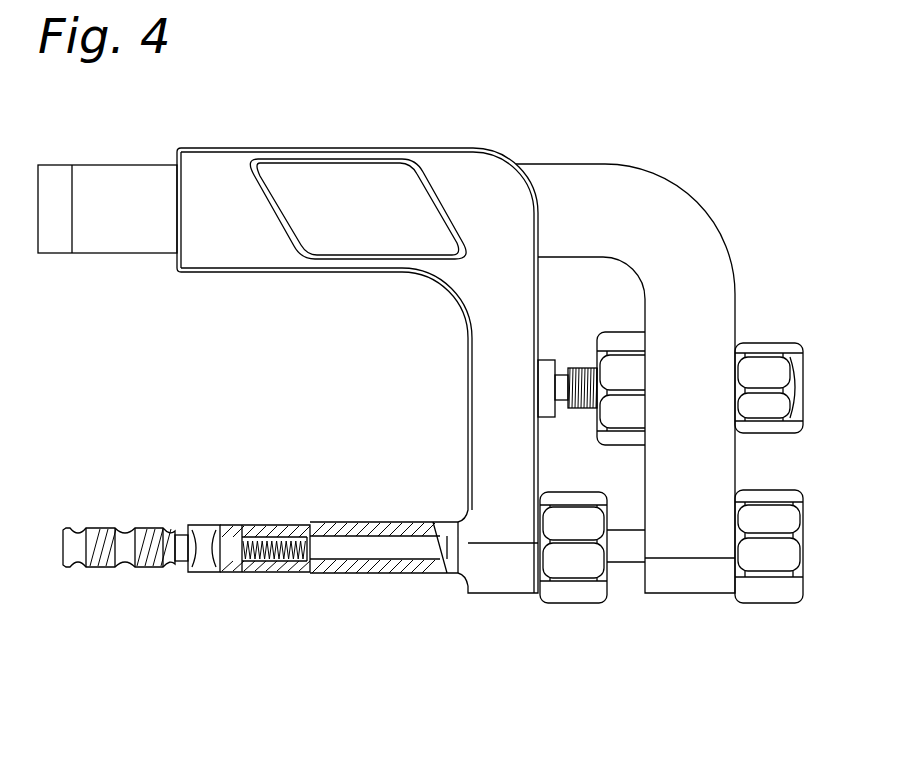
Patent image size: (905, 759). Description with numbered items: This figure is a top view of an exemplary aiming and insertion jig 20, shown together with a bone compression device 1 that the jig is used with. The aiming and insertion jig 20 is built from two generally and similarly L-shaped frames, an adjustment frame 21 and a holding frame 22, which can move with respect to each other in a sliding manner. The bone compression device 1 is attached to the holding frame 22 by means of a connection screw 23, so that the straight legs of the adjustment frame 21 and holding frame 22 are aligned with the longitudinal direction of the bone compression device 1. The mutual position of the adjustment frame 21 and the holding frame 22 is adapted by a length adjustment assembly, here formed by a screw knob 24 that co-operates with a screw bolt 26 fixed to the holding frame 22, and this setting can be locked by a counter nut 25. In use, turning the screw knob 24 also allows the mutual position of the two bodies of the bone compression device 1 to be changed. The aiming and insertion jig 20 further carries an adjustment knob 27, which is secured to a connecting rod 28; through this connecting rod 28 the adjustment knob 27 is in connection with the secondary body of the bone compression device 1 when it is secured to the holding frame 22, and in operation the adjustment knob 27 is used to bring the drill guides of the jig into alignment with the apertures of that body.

The bone compression device 1 is at (318, 512).
The aiming and insertion jig 20 is at (143, 337).
The adjustment frame 21 is at (643, 197).
The holding frame 22 is at (483, 168).
The connection screw 23 is at (573, 572).
The screw knob 24 is at (770, 365).
The counter nut 25 is at (620, 340).
The screw bolt 26 is at (540, 363).
The adjustment knob 27 is at (778, 517).
The connecting rod 28 is at (627, 552).